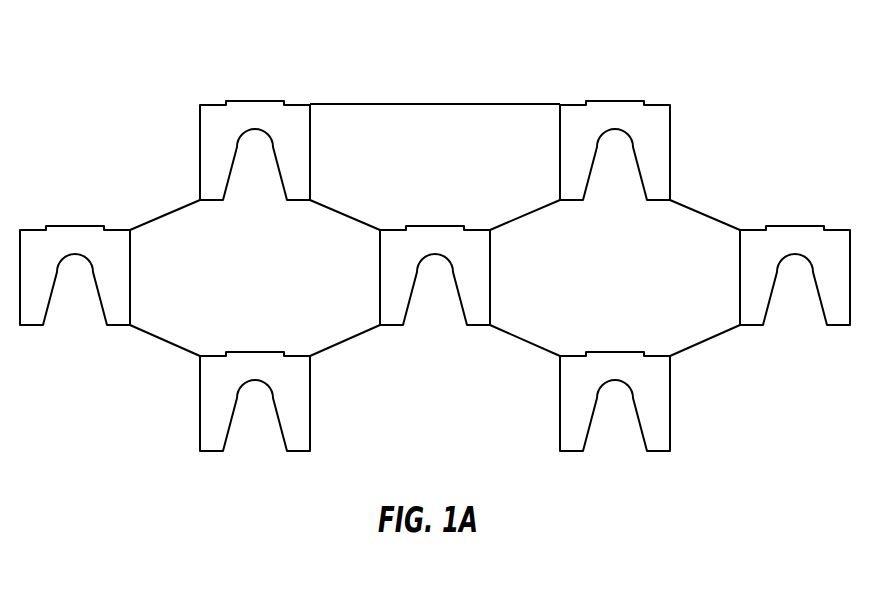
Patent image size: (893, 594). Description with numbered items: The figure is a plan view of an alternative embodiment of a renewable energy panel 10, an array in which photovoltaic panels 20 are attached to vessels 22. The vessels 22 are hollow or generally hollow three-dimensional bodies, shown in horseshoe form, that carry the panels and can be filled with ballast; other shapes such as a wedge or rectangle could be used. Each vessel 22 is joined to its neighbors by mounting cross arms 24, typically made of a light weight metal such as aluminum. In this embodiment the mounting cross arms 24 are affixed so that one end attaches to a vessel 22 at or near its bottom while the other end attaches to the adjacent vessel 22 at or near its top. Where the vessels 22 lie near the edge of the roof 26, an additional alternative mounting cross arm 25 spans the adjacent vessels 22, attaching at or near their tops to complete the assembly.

The renewable energy panel 10 is at (109, 55).
The photovoltaic panels 20 is at (246, 100).
The vessels 22 is at (312, 388).
The mounting cross arms 24 is at (158, 338).
The alternative mounting cross arm 25 is at (456, 104).
The roof 26 is at (694, 314).